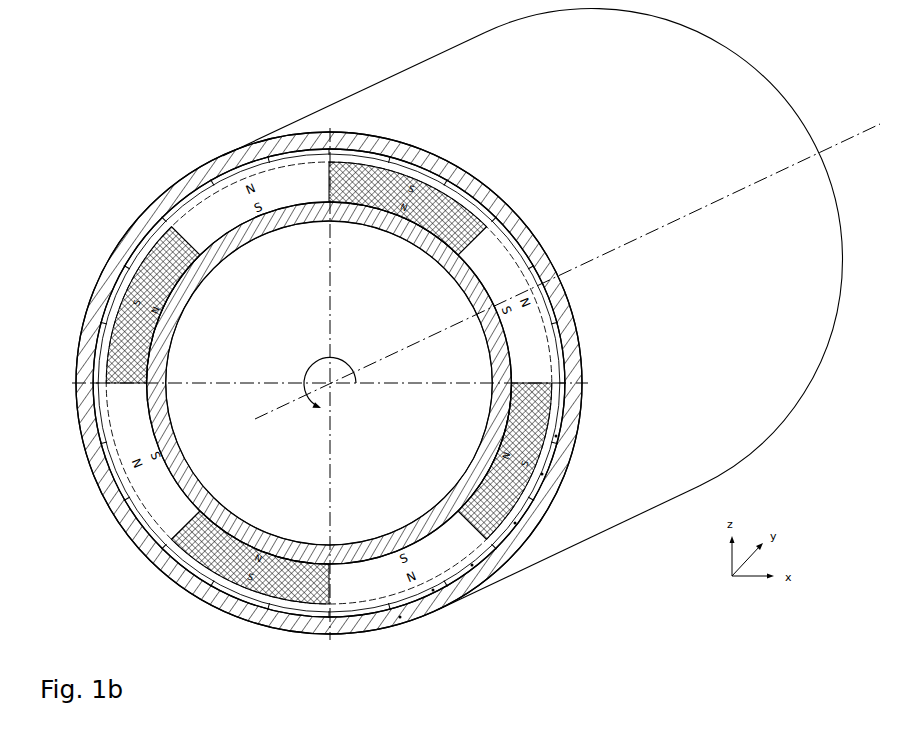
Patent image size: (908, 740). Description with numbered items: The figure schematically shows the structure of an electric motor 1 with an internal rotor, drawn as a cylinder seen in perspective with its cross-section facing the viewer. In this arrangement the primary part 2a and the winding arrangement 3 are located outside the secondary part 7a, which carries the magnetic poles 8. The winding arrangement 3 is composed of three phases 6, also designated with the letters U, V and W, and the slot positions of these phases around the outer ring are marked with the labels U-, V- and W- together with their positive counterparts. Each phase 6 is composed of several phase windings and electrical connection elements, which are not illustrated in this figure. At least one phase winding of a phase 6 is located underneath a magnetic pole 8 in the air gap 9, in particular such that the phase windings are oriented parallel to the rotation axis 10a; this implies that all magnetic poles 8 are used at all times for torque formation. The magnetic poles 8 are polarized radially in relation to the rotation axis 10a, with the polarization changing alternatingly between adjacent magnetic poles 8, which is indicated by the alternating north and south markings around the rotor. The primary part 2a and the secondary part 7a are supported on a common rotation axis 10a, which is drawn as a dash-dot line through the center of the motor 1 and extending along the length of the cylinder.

The electric motor 1 is at (478, 86).
The primary part 2a is at (140, 540).
The winding arrangement 3 is at (433, 157).
The phase 6 is at (459, 162).
The secondary part 7a is at (193, 278).
The magnetic pole 8 is at (492, 265).
The air gap 9 is at (155, 364).
The rotation axis 10a is at (392, 353).
The phase U winding negative U- is at (556, 436).
The phase V winding negative V- is at (542, 474).
The phase W winding negative W- is at (515, 523).